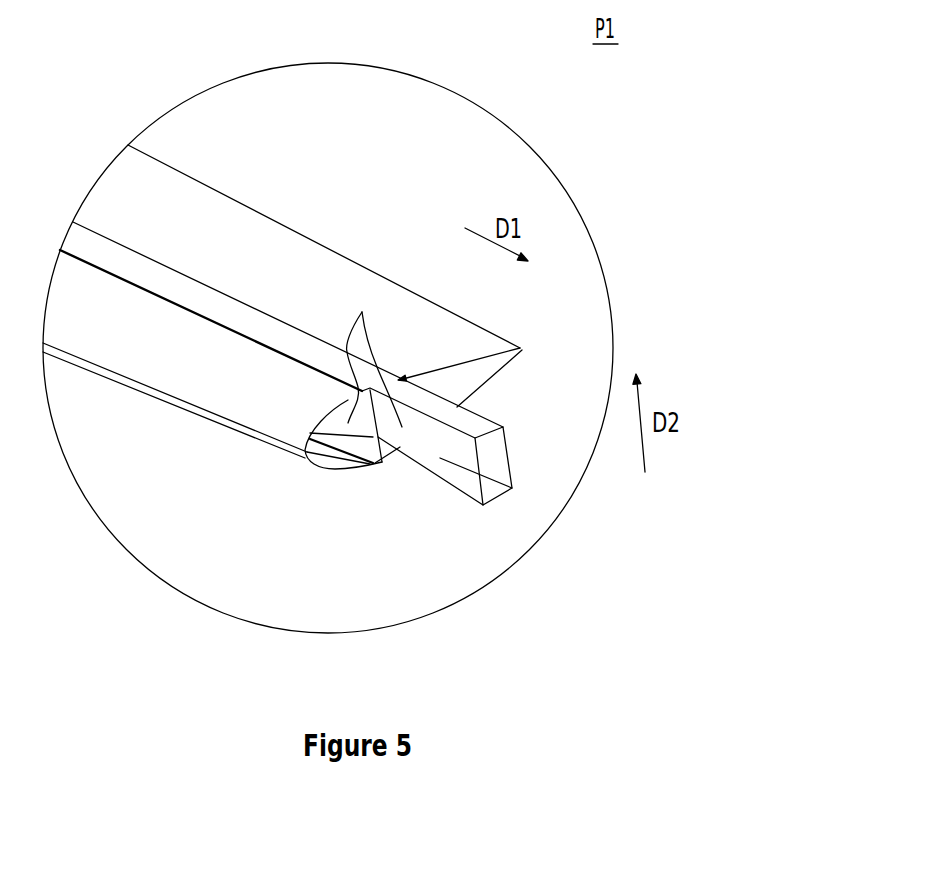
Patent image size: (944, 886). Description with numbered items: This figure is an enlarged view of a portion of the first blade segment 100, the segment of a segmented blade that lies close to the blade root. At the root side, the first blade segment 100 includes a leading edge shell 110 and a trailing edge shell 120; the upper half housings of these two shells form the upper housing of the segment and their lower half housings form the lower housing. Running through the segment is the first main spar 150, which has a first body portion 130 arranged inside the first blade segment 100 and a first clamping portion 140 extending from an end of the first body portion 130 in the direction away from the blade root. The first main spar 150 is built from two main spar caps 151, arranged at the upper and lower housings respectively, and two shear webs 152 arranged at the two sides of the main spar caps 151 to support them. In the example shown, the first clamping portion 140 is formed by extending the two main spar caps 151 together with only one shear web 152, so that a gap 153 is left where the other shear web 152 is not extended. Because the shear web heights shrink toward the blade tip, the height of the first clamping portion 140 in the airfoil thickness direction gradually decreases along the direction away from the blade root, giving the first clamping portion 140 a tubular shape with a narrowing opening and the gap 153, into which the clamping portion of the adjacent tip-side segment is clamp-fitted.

The first blade segment 100 is at (403, 233).
The leading edge shell 110 is at (163, 375).
The trailing edge shell 120 is at (272, 240).
The first body portion 130 is at (330, 467).
The first clamping portion 140 is at (389, 481).
The first main spar 150 is at (287, 546).
The main spar cap 151 is at (485, 487).
The shear web 152 is at (362, 314).
The gap 153 is at (471, 456).